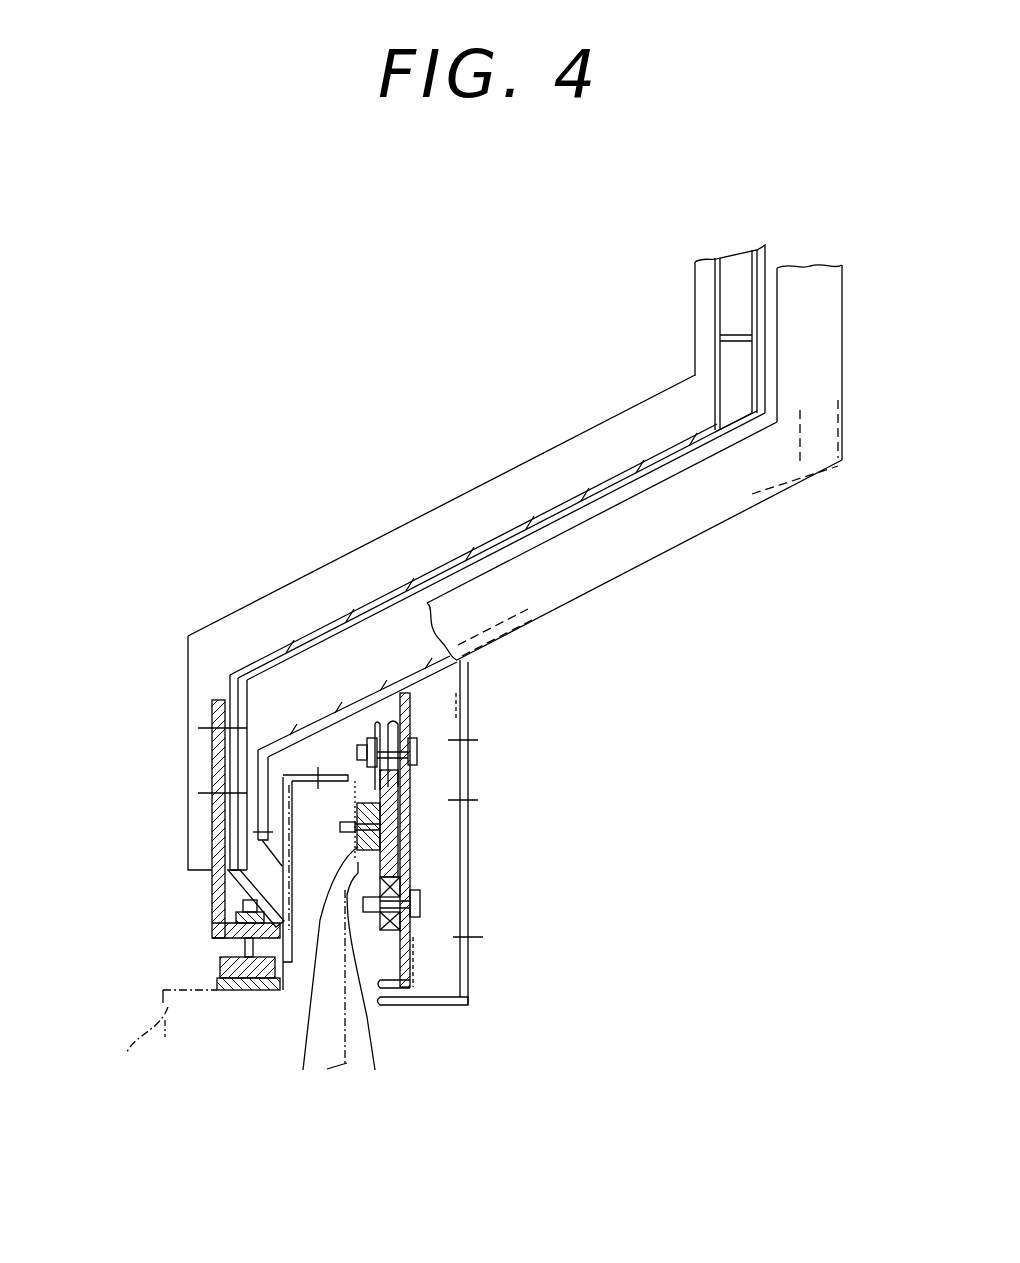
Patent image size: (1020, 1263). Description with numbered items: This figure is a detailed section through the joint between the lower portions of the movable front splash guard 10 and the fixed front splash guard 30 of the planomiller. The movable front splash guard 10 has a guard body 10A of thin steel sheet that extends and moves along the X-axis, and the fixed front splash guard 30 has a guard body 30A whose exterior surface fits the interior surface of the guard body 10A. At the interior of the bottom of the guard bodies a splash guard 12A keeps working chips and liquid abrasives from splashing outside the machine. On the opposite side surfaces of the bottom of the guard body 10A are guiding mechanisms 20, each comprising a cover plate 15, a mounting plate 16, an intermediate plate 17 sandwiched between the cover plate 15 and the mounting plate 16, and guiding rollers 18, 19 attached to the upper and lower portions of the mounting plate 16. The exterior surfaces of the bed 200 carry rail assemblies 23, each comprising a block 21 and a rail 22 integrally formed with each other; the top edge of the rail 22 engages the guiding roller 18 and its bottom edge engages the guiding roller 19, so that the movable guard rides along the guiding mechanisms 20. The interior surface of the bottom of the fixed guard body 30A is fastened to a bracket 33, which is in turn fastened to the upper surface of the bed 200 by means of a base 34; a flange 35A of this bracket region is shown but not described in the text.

The fixed front splash guard 30 is at (442, 412).
The guard body 30A is at (303, 572).
The movable front splash guard 10 is at (820, 488).
The guard body 10A is at (697, 513).
The guiding roller 18 is at (393, 722).
The guiding mechanism 20 is at (553, 743).
The bracket 33 is at (212, 757).
The cover plate 15 is at (468, 797).
The intermediate plate 17 is at (440, 852).
The bracket flange 35A is at (212, 878).
The splash guard 12A is at (262, 880).
The base 34 is at (232, 966).
The guiding roller 19 is at (390, 940).
The mounting plate 16 is at (392, 988).
The bed 200 is at (160, 1043).
The block 21 is at (324, 975).
The rail 22 is at (369, 982).
The rail assembly 23 is at (338, 956).